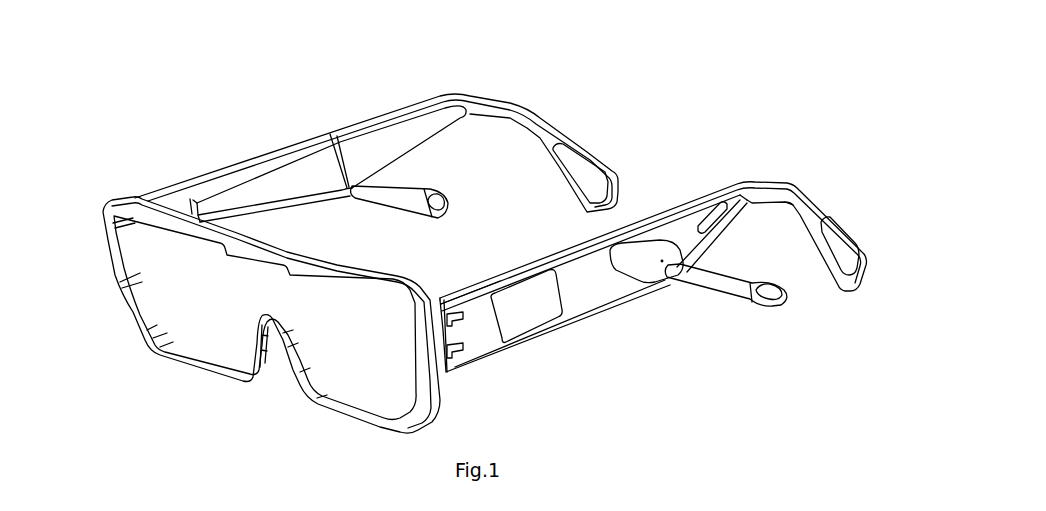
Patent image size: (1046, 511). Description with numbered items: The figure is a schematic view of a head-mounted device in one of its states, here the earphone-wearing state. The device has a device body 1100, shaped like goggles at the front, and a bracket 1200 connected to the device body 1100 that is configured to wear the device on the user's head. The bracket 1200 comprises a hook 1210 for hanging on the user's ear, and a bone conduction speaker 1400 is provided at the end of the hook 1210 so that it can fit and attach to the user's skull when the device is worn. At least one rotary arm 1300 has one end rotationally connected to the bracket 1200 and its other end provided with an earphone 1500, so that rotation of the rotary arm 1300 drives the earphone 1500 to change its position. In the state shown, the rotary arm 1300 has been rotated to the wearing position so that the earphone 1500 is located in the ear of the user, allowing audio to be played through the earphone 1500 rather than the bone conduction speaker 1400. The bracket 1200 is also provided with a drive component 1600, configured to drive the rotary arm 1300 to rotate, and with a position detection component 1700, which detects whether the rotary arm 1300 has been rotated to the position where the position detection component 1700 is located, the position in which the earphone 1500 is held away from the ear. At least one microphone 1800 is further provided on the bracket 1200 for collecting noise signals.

The device body 1100 is at (172, 278).
The bracket 1200 is at (256, 197).
The hook 1210 is at (797, 193).
The rotary arm 1300 is at (380, 190).
The bone conduction speaker 1400 is at (588, 178).
The earphone 1500 is at (430, 181).
The drive component 1600 is at (647, 253).
The position detection component 1700 is at (737, 184).
The microphone 1800 is at (484, 284).